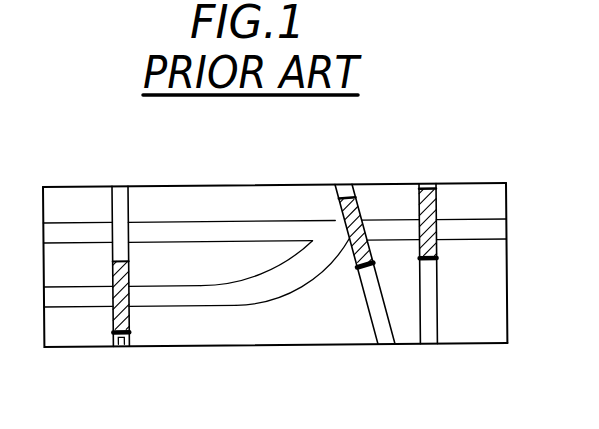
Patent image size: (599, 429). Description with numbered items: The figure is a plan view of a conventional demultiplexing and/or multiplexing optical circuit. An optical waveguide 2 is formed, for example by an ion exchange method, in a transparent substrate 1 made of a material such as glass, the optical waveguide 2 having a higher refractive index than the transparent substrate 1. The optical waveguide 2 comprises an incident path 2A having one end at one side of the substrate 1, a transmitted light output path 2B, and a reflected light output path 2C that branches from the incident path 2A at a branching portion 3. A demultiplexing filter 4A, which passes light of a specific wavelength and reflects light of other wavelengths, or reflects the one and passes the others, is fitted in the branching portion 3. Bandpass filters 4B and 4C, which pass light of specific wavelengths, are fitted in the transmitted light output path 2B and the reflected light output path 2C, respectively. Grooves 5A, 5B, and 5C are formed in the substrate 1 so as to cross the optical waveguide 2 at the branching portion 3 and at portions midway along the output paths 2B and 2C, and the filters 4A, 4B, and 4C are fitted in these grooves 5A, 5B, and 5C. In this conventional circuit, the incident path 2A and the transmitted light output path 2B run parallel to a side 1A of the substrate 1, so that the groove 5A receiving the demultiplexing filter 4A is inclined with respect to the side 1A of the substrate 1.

The transparent substrate 1 is at (239, 197).
The side of the substrate 1A is at (482, 180).
The optical waveguide 2 is at (186, 224).
The incident path 2A is at (72, 230).
The transmitted light output path 2B is at (386, 227).
The reflected light output path 2C is at (232, 295).
The branching portion 3 is at (329, 238).
The demultiplexing filter 4A is at (342, 184).
The bandpass filter 4B is at (427, 185).
The bandpass filter 4C is at (118, 348).
The groove 5A is at (385, 330).
The groove 5B is at (429, 327).
The groove 5C is at (123, 347).